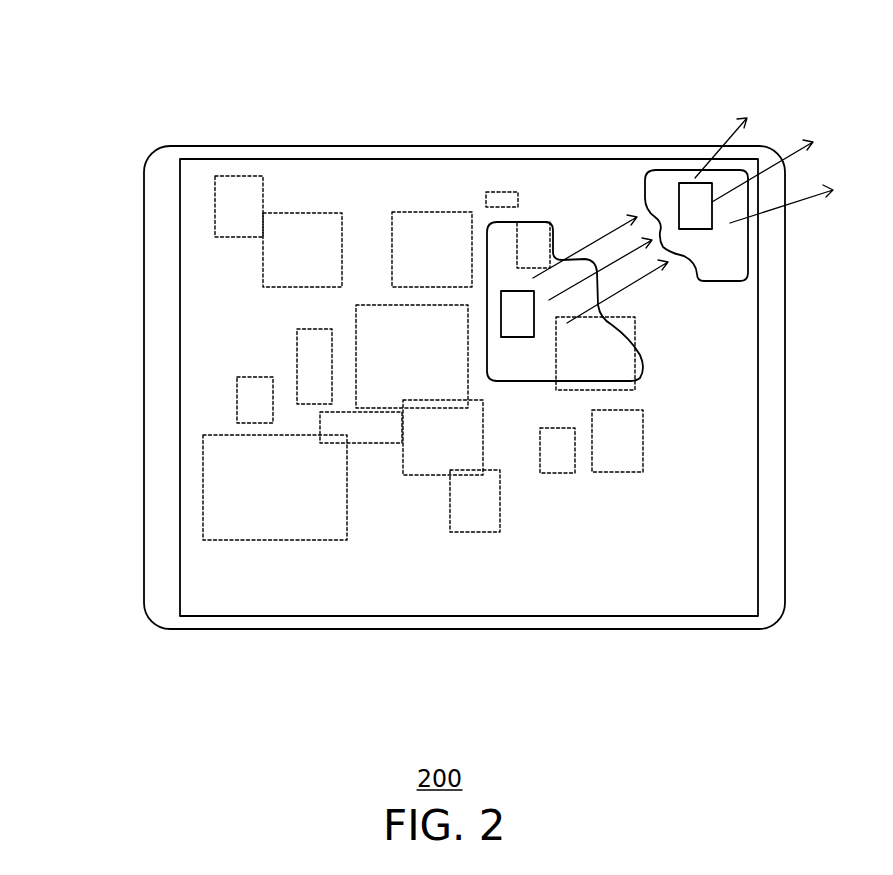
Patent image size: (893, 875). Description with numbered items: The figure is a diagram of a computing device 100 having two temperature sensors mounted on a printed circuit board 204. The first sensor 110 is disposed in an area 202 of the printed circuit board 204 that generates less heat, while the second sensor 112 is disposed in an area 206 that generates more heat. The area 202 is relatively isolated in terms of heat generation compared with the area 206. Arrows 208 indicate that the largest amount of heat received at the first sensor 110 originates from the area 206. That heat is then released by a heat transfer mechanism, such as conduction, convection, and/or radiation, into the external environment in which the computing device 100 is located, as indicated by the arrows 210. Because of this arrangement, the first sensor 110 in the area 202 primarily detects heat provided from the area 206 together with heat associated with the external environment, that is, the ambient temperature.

The computing device 100 is at (143, 265).
The printed circuit board 204 is at (180, 540).
The area 206 is at (529, 381).
The second sensor 112 is at (512, 291).
The arrows 208 is at (628, 287).
The area 202 is at (720, 283).
The first sensor 110 is at (692, 183).
The arrows 210 is at (828, 190).